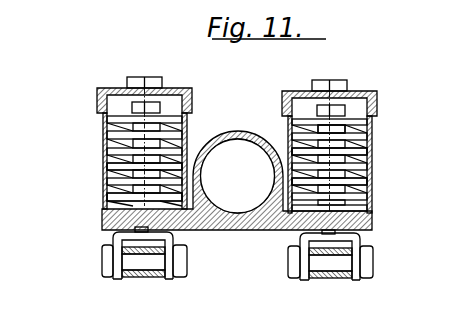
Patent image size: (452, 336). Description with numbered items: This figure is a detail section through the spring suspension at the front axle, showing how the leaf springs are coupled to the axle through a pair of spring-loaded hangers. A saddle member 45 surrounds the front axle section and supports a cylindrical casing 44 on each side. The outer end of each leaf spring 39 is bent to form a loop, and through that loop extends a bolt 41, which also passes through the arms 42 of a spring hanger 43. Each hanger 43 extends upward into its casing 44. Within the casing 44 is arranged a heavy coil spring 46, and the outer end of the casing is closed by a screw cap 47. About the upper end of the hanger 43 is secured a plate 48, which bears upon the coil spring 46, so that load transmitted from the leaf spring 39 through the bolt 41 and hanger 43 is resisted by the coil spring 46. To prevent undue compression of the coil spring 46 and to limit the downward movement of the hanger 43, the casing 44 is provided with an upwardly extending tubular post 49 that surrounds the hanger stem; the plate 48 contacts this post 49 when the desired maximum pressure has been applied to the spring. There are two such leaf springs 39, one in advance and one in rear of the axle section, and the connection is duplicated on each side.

The leaf spring 39 is at (141, 279).
The bolt 41 is at (160, 262).
The arms 42 is at (356, 243).
The spring hanger 43 is at (333, 130).
The cylindrical casing 44 is at (103, 148).
The saddle member 45 is at (233, 130).
The coil spring 46 is at (113, 192).
The screw cap 47 is at (97, 98).
The plate 48 is at (170, 110).
The tubular post 49 is at (123, 170).